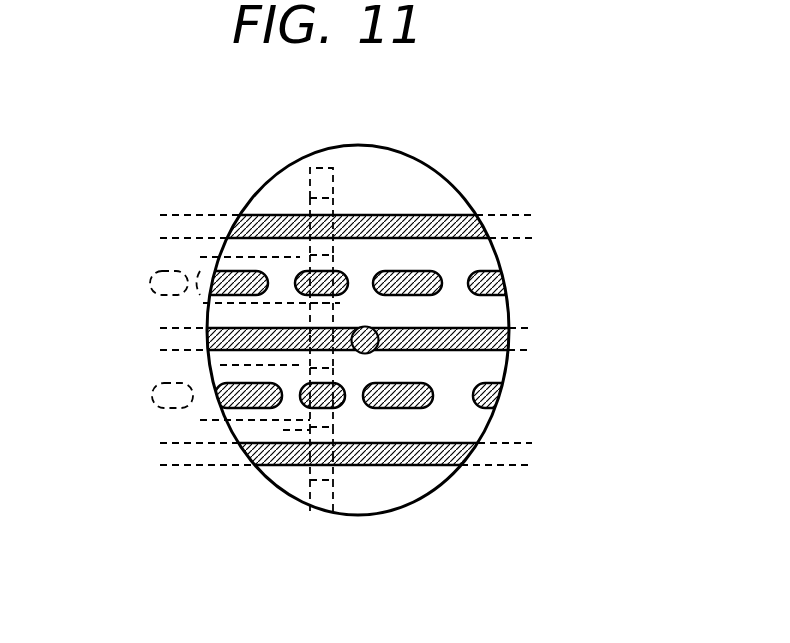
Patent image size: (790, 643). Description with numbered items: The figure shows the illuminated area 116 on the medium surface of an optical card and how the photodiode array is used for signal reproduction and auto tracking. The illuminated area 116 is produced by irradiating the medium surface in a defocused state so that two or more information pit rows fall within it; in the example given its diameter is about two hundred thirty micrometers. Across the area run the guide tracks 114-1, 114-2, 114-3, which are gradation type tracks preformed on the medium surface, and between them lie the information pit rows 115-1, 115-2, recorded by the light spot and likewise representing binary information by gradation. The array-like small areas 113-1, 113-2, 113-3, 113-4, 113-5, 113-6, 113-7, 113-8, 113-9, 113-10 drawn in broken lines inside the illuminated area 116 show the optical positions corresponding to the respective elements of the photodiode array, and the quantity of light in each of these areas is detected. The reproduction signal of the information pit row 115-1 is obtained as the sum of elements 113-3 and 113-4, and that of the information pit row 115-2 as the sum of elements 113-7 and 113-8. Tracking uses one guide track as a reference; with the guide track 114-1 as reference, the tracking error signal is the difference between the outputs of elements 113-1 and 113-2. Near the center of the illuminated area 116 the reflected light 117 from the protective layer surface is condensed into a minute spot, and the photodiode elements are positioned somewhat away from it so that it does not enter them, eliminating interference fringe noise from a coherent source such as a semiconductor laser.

The photodiode array element area 113-1 is at (310, 198).
The photodiode array element area 113-2 is at (310, 252).
The photodiode array element area 113-3 is at (300, 256).
The photodiode array element area 113-4 is at (207, 303).
The photodiode array element area 113-5 is at (310, 316).
The photodiode array element area 113-6 is at (310, 366).
The photodiode array element area 113-7 is at (190, 393).
The photodiode array element area 113-8 is at (300, 421).
The photodiode array element area 113-9 is at (300, 430).
The photodiode array element area 113-10 is at (308, 480).
The guide track 114-1 is at (527, 228).
The guide track 114-2 is at (523, 338).
The guide track 114-3 is at (517, 453).
The information pit row 115-1 is at (510, 283).
The information pit row 115-2 is at (507, 398).
The illuminated area 116 is at (468, 200).
The reflected light 117 is at (375, 333).